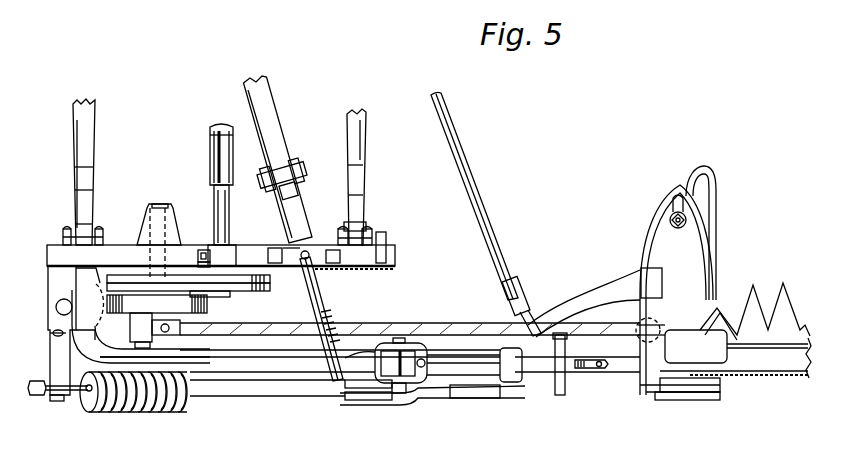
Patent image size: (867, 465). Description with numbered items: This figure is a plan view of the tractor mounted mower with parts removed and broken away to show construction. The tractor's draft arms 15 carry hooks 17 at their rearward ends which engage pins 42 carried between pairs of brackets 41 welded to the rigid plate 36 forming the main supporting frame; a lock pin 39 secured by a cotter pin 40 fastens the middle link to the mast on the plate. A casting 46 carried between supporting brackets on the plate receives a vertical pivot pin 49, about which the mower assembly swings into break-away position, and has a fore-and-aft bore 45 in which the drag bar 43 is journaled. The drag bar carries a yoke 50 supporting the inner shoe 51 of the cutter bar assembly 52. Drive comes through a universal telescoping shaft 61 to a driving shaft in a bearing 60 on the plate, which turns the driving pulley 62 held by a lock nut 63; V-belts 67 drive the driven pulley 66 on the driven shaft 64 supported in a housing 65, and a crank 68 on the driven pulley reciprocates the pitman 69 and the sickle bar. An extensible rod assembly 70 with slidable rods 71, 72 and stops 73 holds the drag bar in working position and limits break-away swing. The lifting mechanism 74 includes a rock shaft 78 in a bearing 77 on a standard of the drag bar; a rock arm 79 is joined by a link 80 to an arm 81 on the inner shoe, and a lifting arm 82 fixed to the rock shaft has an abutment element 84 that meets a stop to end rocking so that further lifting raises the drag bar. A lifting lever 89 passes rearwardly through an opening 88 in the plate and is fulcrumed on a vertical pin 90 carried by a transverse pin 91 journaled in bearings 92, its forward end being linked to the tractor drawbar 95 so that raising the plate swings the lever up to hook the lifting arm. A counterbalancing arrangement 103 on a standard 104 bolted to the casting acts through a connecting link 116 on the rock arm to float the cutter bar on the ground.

The draft arm 15 is at (91, 122).
The hook 17 is at (76, 206).
The plate 36 is at (352, 268).
The lock pin 39 is at (236, 246).
The cotter pin 40 is at (202, 250).
The bracket 41 is at (386, 248).
The pin 42 is at (372, 236).
The drag bar 43 is at (266, 378).
The bore 45 is at (109, 285).
The casting 46 is at (94, 292).
The pivot pin 49 is at (56, 307).
The yoke 50 is at (597, 364).
The inner shoe 51 is at (678, 280).
The cutter bar assembly 52 is at (783, 283).
The bearing 60 is at (230, 261).
The universal telescoping shaft 61 is at (270, 187).
The driving pulley 62 is at (260, 294).
The lock nut 63 is at (200, 297).
The driven shaft 64 is at (146, 229).
The housing 65 is at (172, 217).
The driven pulley 66 is at (139, 266).
The V-belts 67 is at (262, 283).
The crank 68 is at (157, 304).
The pitman 69 is at (274, 331).
The extensible rod assembly 70 is at (499, 240).
The rod 71 is at (457, 183).
The rod 72 is at (532, 318).
The stop 73 is at (527, 292).
The lifting mechanism 74 is at (318, 142).
The bearing 77 is at (414, 350).
The rock shaft 78 is at (400, 338).
The rock arm 79 is at (398, 398).
The link 80 is at (517, 392).
The arm 81 is at (689, 385).
The lifting arm 82 is at (372, 346).
The abutment element 84 is at (442, 362).
The opening 88 is at (310, 280).
The lifting lever 89 is at (316, 298).
The vertical pin 90 is at (308, 250).
The transverse pin 91 is at (289, 250).
The bearing 92 is at (273, 248).
The drawbar 95 is at (267, 99).
The counterbalancing arrangement 103 is at (150, 413).
The standard 104 is at (46, 372).
The connecting link 116 is at (365, 139).